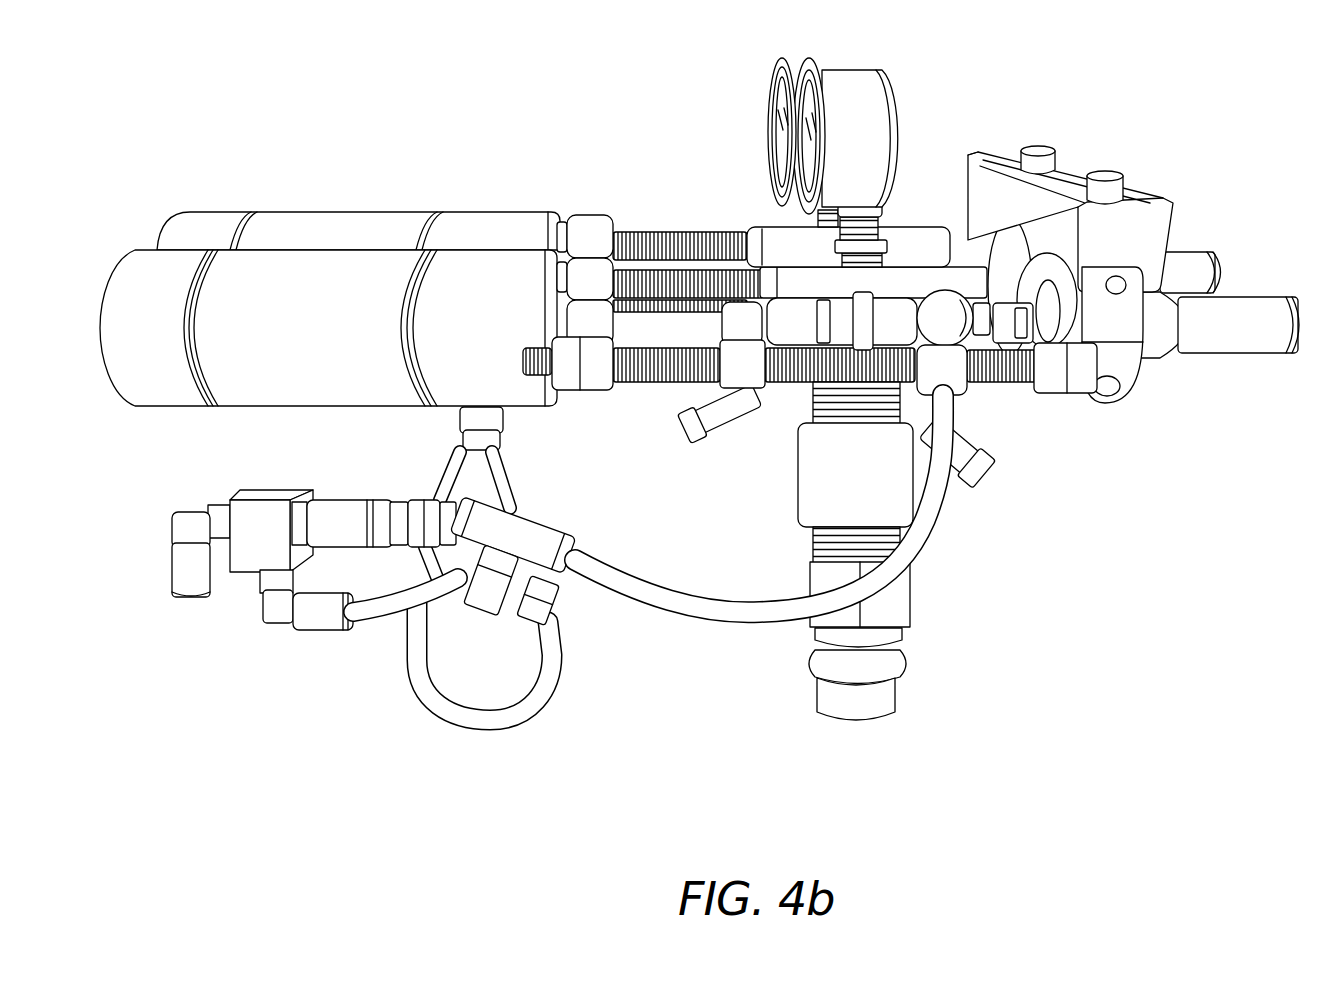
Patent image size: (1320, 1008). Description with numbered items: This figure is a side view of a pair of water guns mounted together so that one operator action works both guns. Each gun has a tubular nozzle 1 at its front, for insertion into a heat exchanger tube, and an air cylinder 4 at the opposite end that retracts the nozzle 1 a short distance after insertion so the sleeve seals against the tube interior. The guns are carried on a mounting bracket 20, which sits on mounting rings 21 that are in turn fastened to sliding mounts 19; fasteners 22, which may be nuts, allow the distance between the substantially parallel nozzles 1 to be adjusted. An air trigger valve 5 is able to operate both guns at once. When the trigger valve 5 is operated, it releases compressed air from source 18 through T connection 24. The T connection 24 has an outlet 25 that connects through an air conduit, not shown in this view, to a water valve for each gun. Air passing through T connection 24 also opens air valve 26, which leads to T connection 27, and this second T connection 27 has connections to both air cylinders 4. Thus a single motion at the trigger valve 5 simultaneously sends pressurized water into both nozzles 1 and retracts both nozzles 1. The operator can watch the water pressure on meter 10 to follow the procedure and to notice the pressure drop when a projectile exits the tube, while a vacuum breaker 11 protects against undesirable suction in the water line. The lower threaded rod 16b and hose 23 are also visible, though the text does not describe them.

The nozzle 1 is at (1225, 357).
The air cylinder 4 is at (162, 225).
The air trigger valve 5 is at (953, 322).
The meter 10 is at (845, 70).
The vacuum breaker 11 is at (965, 480).
The lower threaded rod 16b is at (660, 380).
The source 18 is at (740, 305).
The sliding mounts 19 is at (1162, 380).
The mounting bracket 20 is at (975, 157).
The mounting rings 21 is at (1125, 404).
The fasteners 22 is at (1105, 170).
The hose 23 is at (730, 622).
The T connection 24 is at (552, 538).
The outlet 25 is at (485, 625).
The air valve 26 is at (270, 495).
The T connection 27 is at (565, 612).